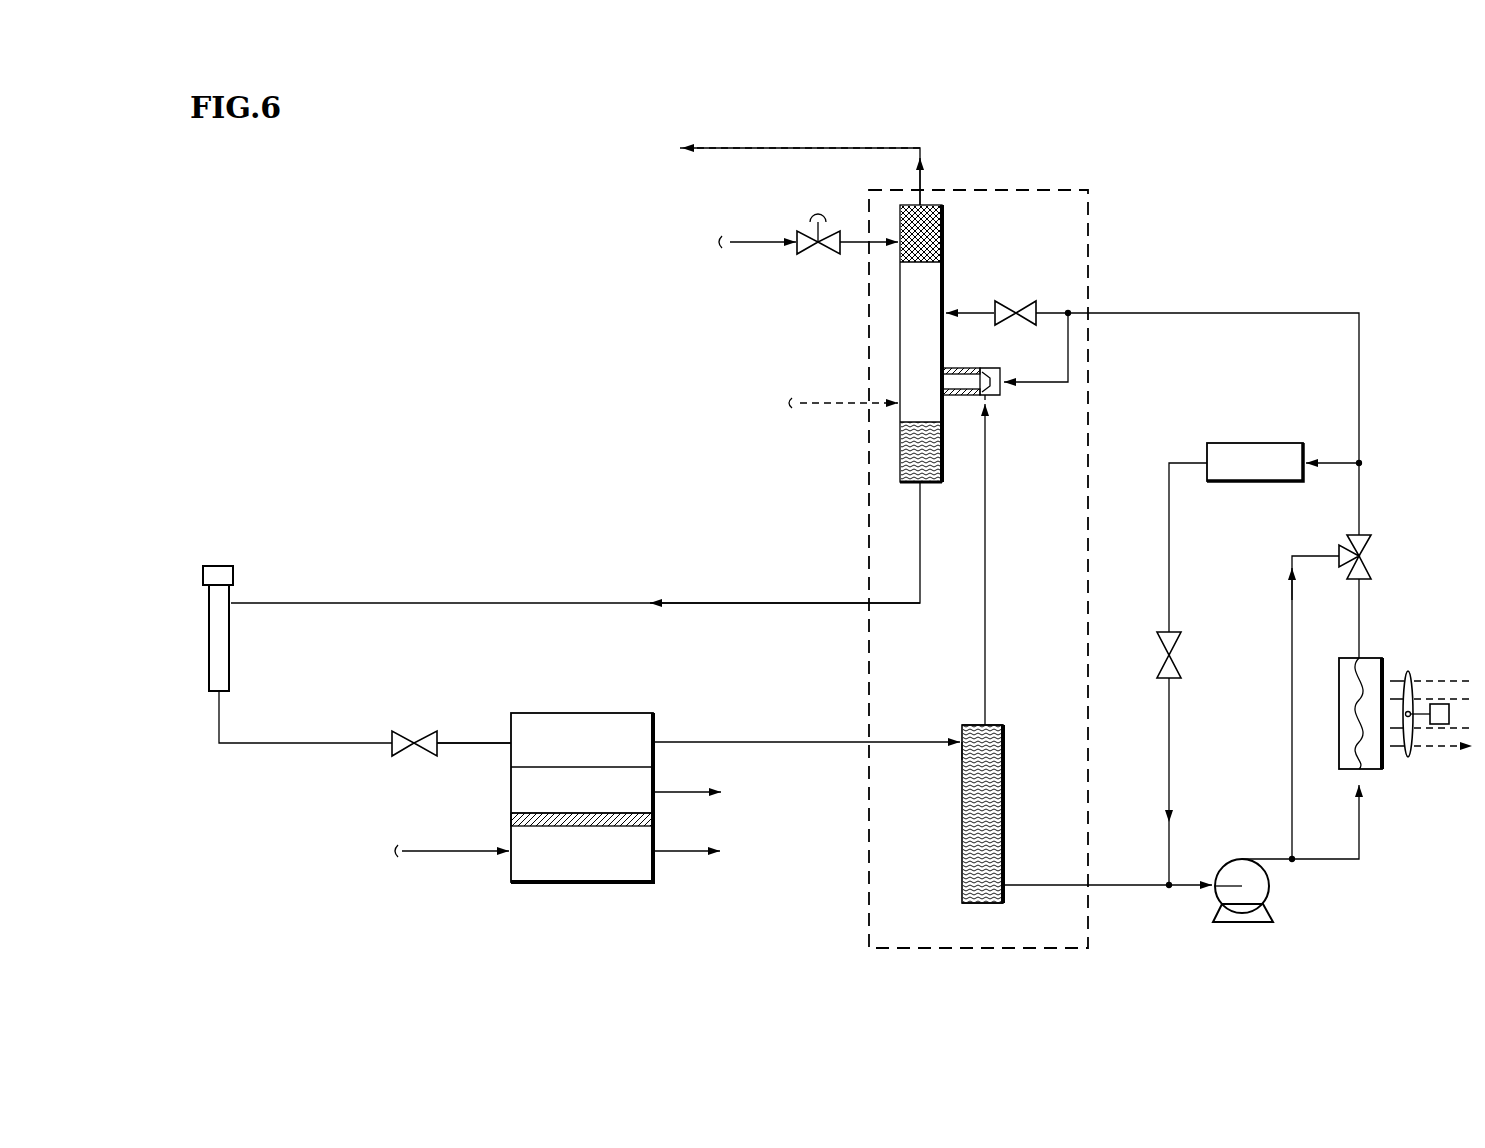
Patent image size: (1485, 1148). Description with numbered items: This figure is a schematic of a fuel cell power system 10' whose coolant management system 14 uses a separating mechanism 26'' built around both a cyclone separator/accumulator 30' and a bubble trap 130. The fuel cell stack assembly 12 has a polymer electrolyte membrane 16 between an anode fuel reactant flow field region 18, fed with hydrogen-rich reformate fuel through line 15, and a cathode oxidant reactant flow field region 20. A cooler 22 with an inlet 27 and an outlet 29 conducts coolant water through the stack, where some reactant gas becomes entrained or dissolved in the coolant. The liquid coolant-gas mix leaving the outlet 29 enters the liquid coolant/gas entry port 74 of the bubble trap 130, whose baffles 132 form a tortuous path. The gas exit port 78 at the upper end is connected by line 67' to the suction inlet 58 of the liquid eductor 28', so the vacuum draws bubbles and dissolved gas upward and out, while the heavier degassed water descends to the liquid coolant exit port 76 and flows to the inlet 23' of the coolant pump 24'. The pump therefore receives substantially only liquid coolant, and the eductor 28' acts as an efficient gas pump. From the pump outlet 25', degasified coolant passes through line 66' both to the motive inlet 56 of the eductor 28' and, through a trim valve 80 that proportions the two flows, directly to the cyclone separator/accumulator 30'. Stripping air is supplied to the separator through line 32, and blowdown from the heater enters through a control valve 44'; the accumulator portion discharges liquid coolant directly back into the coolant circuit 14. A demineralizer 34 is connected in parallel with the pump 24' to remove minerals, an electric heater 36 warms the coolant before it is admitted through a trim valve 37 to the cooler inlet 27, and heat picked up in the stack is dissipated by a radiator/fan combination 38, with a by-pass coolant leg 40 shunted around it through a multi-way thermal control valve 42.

The fuel cell power system 10' is at (812, 542).
The fuel cell stack assembly 12 is at (644, 769).
The coolant management system 14 is at (385, 600).
The fuel supply line 15 is at (455, 852).
The polymer electrolyte membrane 16 is at (650, 820).
The anode fuel reactant flow field region 18 is at (645, 870).
The cathode oxidant reactant flow field region 20 is at (648, 790).
The cooler 22 is at (535, 712).
The coolant pump inlet 23' is at (1155, 899).
The coolant pump 24' is at (1269, 890).
The coolant pump outlet 25' is at (1299, 822).
The separating mechanism 26'' is at (996, 545).
The cooler inlet 27 is at (510, 742).
The liquid eductor 28' is at (999, 365).
The cooler outlet 29 is at (655, 742).
The cyclone separator/accumulator 30' is at (965, 343).
The air supply line 32 is at (893, 400).
The demineralizer 34 is at (1252, 443).
The electric heater 36 is at (207, 622).
The trim valve 37 is at (415, 740).
The radiator/fan combination 38 is at (1402, 662).
The by-pass coolant leg 40 is at (1290, 640).
The multi-way thermal control valve 42 is at (1363, 558).
The control valve 44' is at (740, 231).
The motive inlet 56 is at (1002, 390).
The suction inlet 58 is at (988, 397).
The coolant supply line 66' is at (1197, 409).
The gas line 67' is at (1004, 564).
The liquid coolant/gas entry port 74 is at (960, 745).
The liquid coolant exit port 76 is at (1008, 884).
The gas exit port 78 is at (988, 724).
The trim valve 80 is at (1013, 310).
The bubble trap 130 is at (960, 855).
The baffles 132 is at (983, 904).